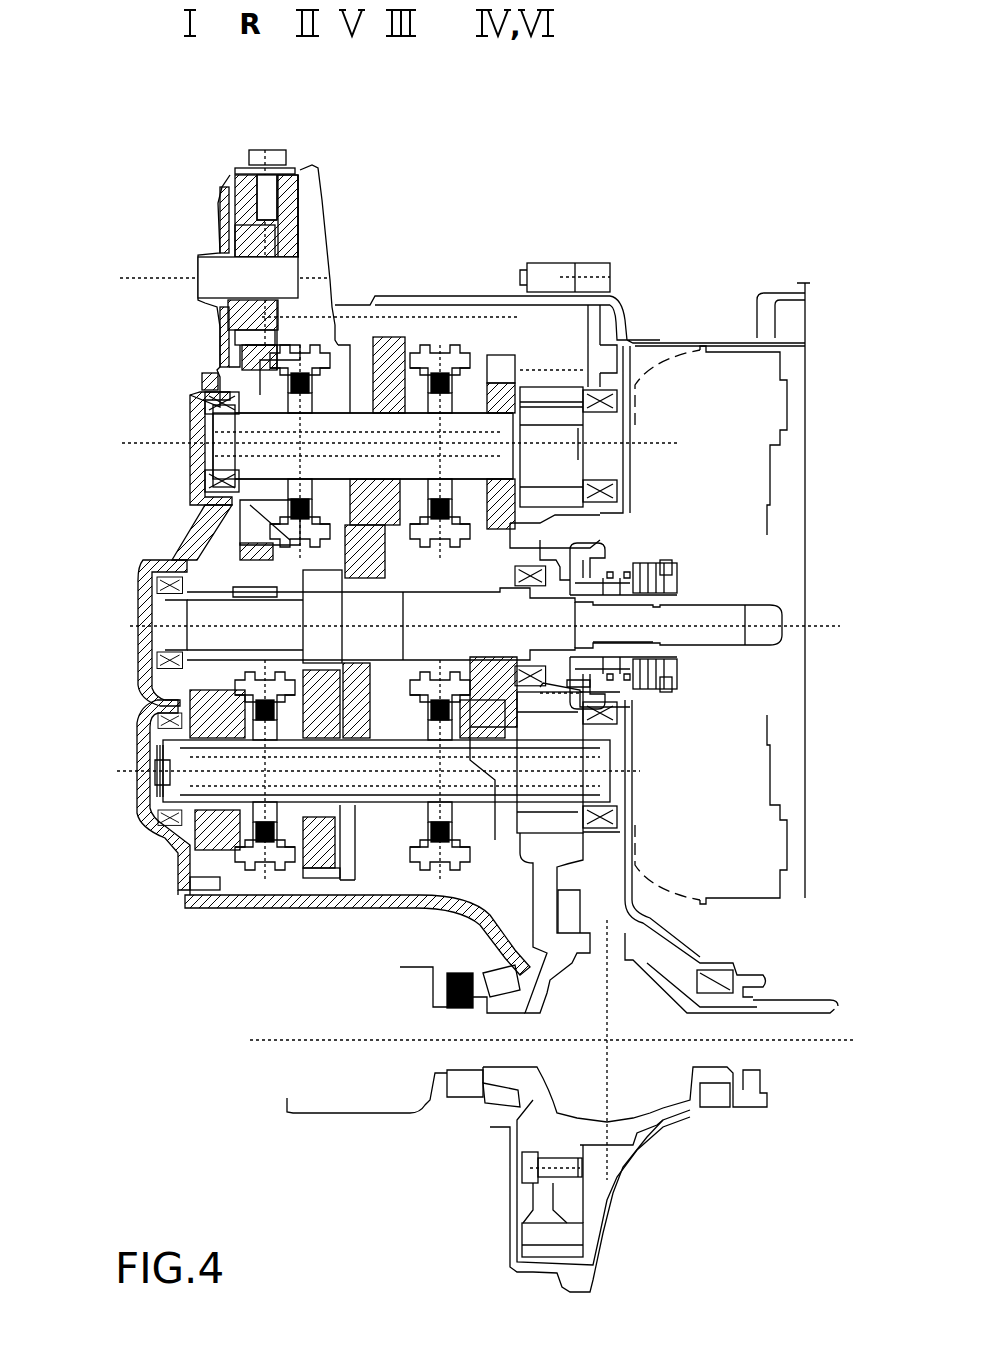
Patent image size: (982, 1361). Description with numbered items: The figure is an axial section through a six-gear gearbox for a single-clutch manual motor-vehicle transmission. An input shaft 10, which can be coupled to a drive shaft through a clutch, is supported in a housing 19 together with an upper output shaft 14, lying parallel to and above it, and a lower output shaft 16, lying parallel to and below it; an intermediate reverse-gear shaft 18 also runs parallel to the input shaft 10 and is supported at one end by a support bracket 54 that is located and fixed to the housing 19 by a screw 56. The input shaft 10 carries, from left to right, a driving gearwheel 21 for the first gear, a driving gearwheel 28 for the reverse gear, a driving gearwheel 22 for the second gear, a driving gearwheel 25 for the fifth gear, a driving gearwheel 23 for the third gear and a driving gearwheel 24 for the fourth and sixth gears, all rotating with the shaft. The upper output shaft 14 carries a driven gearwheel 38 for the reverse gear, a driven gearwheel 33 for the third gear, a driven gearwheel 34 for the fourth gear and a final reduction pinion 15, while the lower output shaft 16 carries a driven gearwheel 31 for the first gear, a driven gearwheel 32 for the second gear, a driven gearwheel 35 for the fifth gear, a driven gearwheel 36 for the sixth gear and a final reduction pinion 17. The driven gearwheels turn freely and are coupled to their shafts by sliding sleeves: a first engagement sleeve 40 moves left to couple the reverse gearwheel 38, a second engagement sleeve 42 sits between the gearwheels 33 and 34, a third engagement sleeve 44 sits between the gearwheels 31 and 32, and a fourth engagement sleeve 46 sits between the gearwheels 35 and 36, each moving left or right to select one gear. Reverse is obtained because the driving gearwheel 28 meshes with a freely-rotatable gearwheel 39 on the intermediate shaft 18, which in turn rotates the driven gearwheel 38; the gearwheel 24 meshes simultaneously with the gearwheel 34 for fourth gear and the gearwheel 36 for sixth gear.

The input shaft 10 is at (185, 636).
The upper output shaft 14 is at (230, 425).
The final reduction pinion 15 is at (563, 497).
The lower output shaft 16 is at (175, 793).
The final reduction pinion 17 is at (560, 718).
The intermediate reverse-gear shaft 18 is at (225, 266).
The housing 19 is at (142, 575).
The driving gearwheel for the first gear 21 is at (198, 596).
The driving gearwheel for the second gear 22 is at (303, 580).
The driving gearwheel for the third gear 23 is at (388, 697).
The driving gearwheel for the fourth and sixth gears 24 is at (587, 520).
The driving gearwheel for the fifth gear 25 is at (357, 540).
The driving gearwheel for the reverse gear 28 is at (240, 660).
The driven gearwheel for the first gear 31 is at (197, 890).
The driven gearwheel for the second gear 32 is at (323, 870).
The driven gearwheel for the third gear 33 is at (388, 340).
The driven gearwheel for the fourth gear 34 is at (500, 360).
The driven gearwheel for the fifth gear 35 is at (350, 833).
The driven gearwheel for the sixth gear 36 is at (495, 837).
The driven gearwheel for the reverse gear 38 is at (275, 582).
The freely-rotatable gearwheel 39 is at (240, 237).
The first engagement sleeve 40 is at (235, 345).
The second engagement sleeve 42 is at (450, 365).
The third engagement sleeve 44 is at (270, 863).
The fourth engagement sleeve 46 is at (433, 867).
The support bracket 54 is at (300, 185).
The screw 56 is at (263, 150).